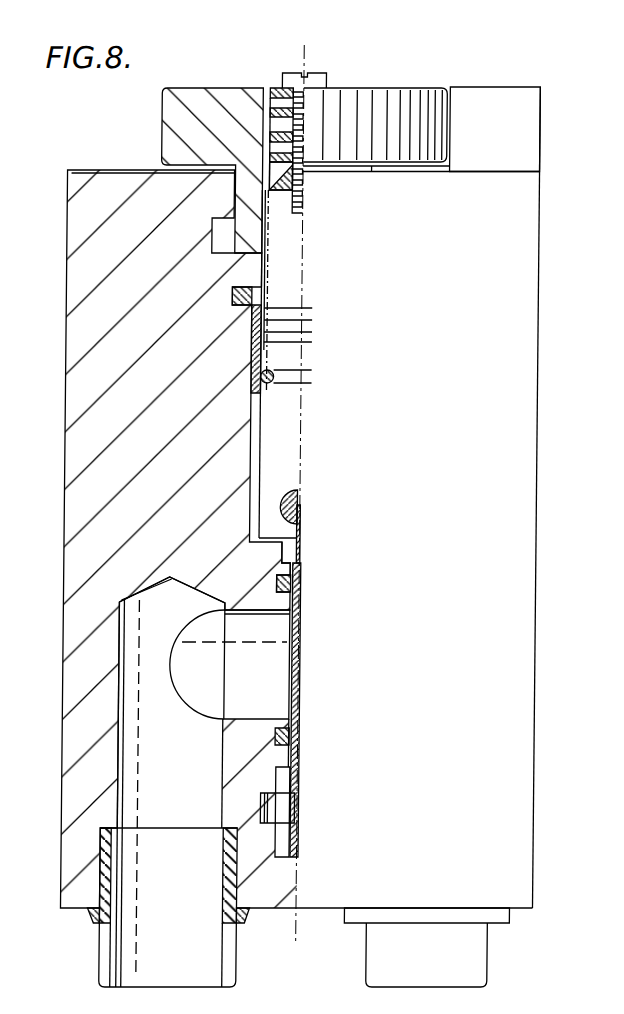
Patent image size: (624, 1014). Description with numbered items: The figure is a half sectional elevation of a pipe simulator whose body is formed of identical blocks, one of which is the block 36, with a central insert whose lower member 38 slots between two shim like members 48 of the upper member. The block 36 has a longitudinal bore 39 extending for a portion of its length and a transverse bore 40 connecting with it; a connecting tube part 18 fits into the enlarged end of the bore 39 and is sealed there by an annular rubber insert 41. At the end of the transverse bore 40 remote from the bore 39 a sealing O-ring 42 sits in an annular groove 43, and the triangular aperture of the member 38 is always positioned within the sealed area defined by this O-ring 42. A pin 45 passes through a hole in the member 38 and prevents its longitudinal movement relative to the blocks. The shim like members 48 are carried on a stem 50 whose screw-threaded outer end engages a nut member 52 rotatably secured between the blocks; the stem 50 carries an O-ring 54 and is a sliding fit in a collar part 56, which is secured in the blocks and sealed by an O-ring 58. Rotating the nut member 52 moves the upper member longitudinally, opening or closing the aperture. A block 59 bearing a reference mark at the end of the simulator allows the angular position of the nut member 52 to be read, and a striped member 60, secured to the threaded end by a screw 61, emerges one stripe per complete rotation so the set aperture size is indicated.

The tube part 18 is at (147, 954).
The block 36 is at (519, 455).
The lower member 38 is at (300, 786).
The longitudinal bore 39 is at (157, 753).
The transverse bore 40 is at (186, 661).
The annular rubber insert 41 is at (90, 918).
The sealing O-ring 42 is at (299, 741).
The annular groove 43 is at (289, 734).
The pin 45 is at (283, 808).
The shim like member 48 is at (302, 636).
The stem 50 is at (285, 491).
The nut member 52 is at (174, 110).
The O-ring 54 is at (273, 378).
The collar part 56 is at (250, 320).
The O-ring 58 is at (249, 293).
The block bearing a reference mark 59 is at (526, 131).
The striped member 60 is at (274, 102).
The screw 61 is at (314, 80).